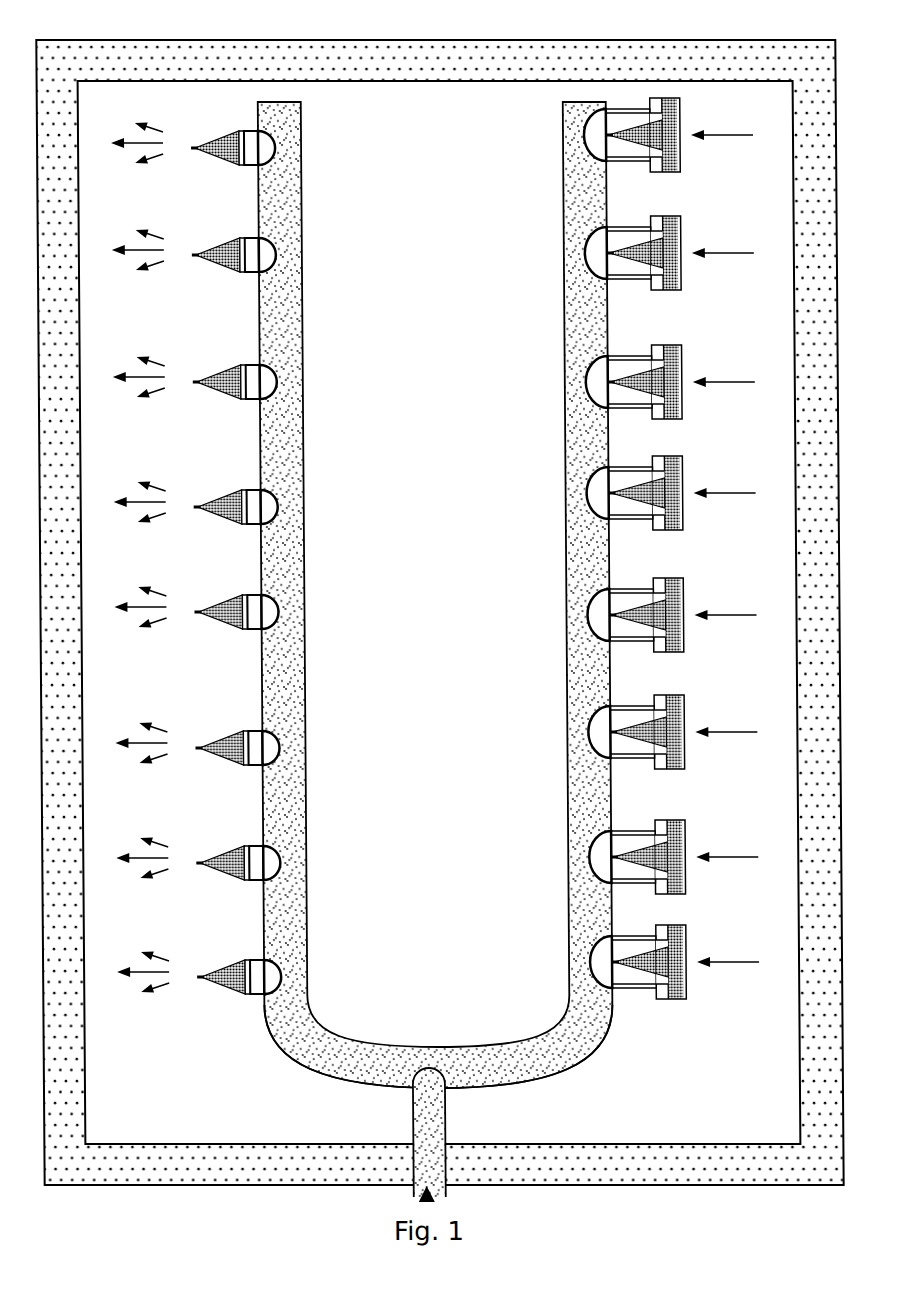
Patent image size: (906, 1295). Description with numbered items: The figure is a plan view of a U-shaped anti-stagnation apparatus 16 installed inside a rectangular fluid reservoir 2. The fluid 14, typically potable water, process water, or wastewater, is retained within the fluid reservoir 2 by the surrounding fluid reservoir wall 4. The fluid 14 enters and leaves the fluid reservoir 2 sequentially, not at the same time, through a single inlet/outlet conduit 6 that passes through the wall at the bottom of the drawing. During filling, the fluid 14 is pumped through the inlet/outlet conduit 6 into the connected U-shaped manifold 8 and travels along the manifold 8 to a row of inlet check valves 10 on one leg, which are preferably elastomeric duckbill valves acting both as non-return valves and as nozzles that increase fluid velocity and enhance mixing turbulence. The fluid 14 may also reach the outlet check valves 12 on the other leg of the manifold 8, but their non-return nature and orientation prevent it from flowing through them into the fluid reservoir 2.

The fluid reservoir 2 is at (128, 40).
The fluid reservoir wall 4 is at (62, 762).
The inlet/outlet conduit 6 is at (414, 1200).
The manifold 8 is at (334, 1068).
The inlet check valves 10 is at (257, 386).
The outlet check valves 12 is at (656, 490).
The fluid 14 is at (486, 272).
The anti-stagnation apparatus 16 is at (300, 1080).